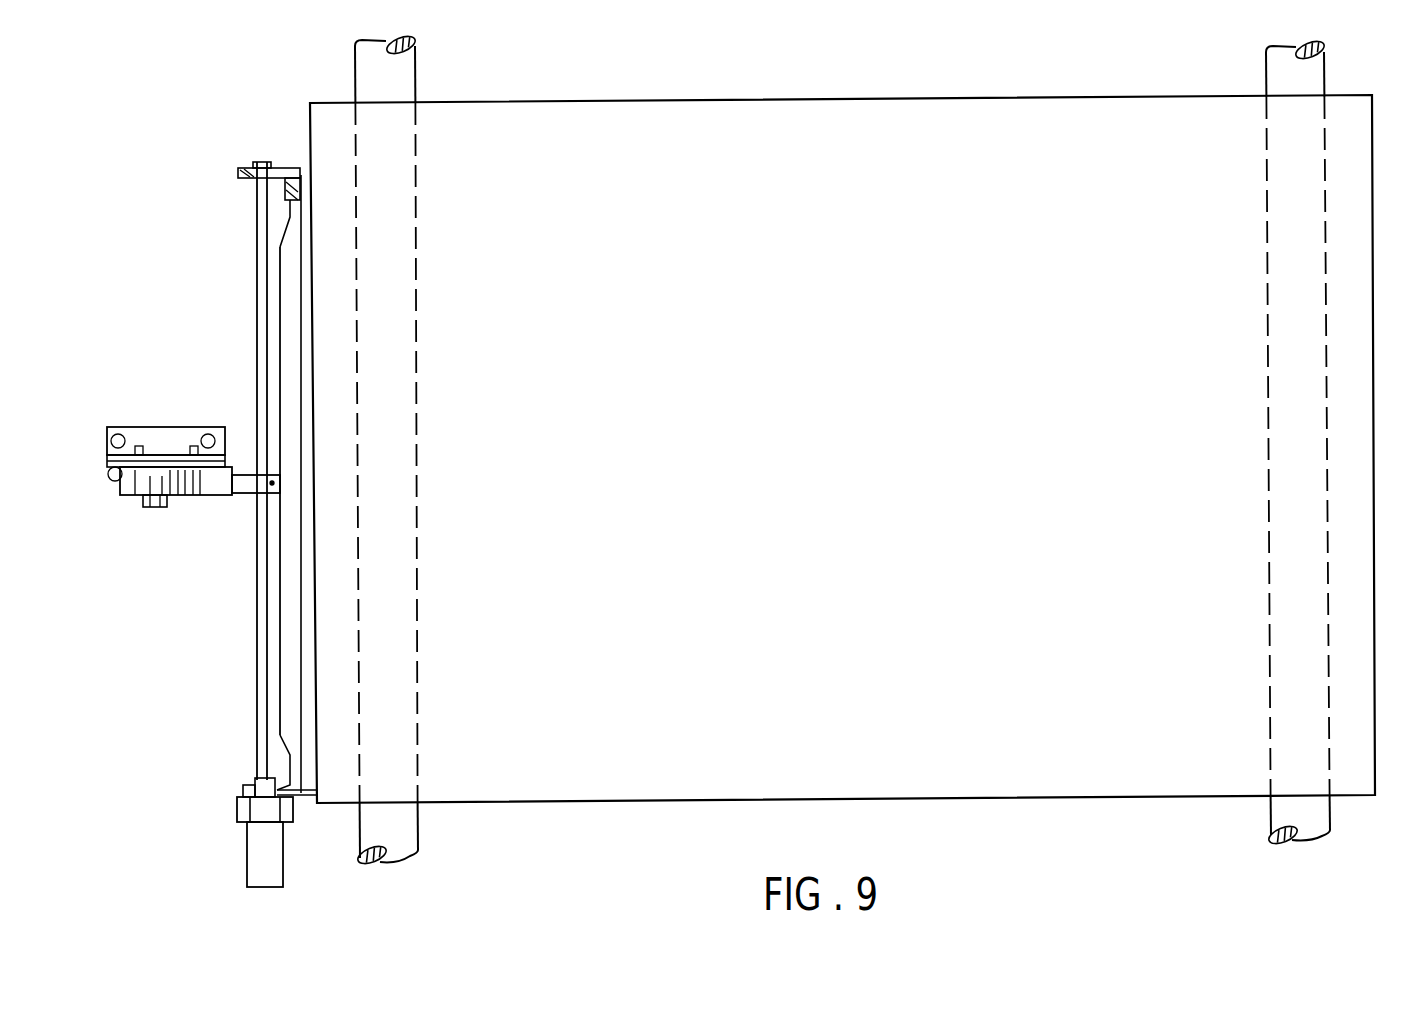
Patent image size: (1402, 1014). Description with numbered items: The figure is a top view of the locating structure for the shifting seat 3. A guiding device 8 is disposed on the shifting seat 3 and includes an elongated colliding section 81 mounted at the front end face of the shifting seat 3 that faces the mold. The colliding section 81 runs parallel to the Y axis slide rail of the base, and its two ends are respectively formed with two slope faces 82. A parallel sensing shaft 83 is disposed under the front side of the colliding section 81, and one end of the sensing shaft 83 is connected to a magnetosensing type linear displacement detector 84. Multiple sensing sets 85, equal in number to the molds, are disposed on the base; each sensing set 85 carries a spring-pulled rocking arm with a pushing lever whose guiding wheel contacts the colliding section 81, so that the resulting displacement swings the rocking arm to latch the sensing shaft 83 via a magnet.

The shifting seat 3 is at (793, 118).
The guiding device 8 is at (220, 396).
The colliding section 81 is at (288, 312).
The slope faces 82 is at (282, 232).
The sensing shaft 83 is at (263, 628).
The magnetosensing type linear displacement detector 84 is at (258, 852).
The sensing sets 85 is at (156, 437).